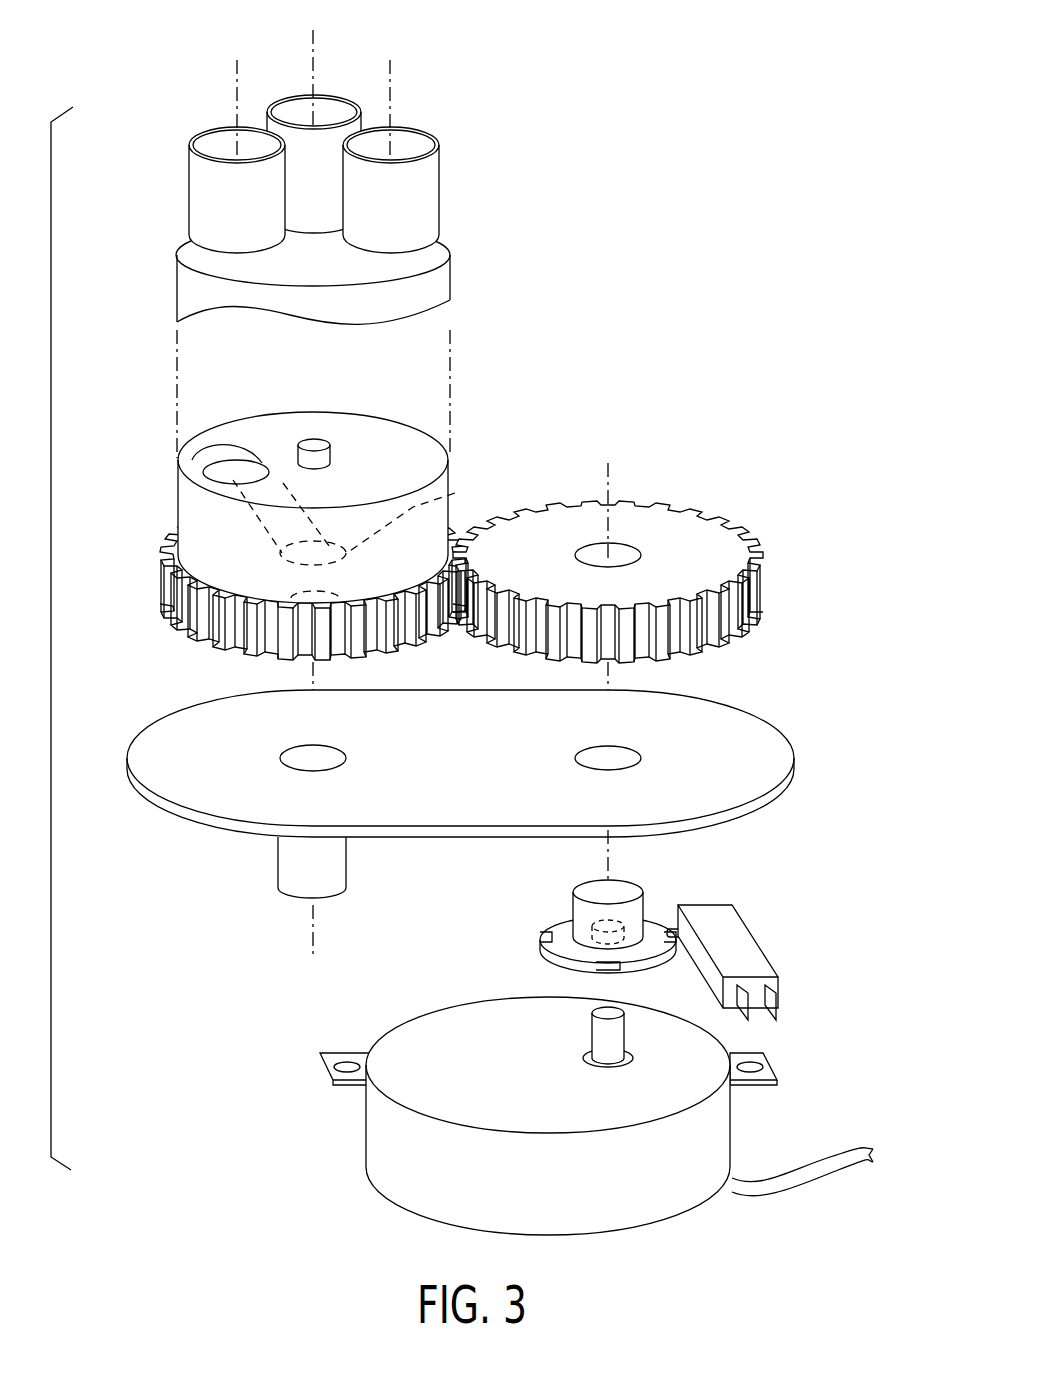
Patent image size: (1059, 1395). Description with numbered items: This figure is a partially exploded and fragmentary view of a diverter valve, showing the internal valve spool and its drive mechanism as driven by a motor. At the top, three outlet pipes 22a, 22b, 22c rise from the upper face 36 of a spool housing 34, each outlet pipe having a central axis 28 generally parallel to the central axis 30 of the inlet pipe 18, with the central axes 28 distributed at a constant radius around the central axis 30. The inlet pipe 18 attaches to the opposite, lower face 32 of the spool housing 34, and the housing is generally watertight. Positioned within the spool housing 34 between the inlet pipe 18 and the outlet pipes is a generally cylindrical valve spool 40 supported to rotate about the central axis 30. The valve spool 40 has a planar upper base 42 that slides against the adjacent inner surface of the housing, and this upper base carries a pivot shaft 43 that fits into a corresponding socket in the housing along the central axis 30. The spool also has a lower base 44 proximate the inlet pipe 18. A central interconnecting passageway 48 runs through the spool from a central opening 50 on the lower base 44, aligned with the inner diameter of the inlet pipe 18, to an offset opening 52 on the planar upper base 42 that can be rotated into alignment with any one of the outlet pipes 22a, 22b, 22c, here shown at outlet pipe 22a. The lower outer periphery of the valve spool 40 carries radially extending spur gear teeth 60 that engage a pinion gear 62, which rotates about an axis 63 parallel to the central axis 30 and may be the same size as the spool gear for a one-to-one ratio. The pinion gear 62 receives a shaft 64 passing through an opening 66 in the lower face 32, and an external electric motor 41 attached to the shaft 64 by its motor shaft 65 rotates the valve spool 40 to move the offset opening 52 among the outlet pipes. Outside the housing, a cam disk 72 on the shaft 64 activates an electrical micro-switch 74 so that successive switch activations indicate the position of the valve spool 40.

The inlet pipe 18 is at (278, 858).
The outlet pipe 22a is at (212, 140).
The outlet pipe 22b is at (283, 108).
The outlet pipe 22c is at (380, 137).
The central axes 28 is at (237, 80).
The central axis 30 is at (313, 928).
The lower face 32 is at (237, 655).
The spool housing 34 is at (177, 285).
The upper face 36 is at (258, 287).
The valve spool 40 is at (178, 510).
The electric motor 41 is at (366, 1128).
The planar upper base 42 is at (272, 433).
The pivot shaft 43 is at (332, 455).
The lower base 44 is at (155, 742).
The central interconnecting passageway 48 is at (337, 553).
The central opening 50 is at (455, 493).
The offset opening 52 is at (185, 460).
The spur gear teeth 60 is at (165, 612).
The pinion gear 62 is at (725, 545).
The axis 63 is at (610, 498).
The shaft 64 is at (582, 905).
The motor shaft 65 is at (592, 1040).
The opening 66 is at (638, 760).
The cam disk 72 is at (657, 922).
The electrical micro-switch 74 is at (742, 958).